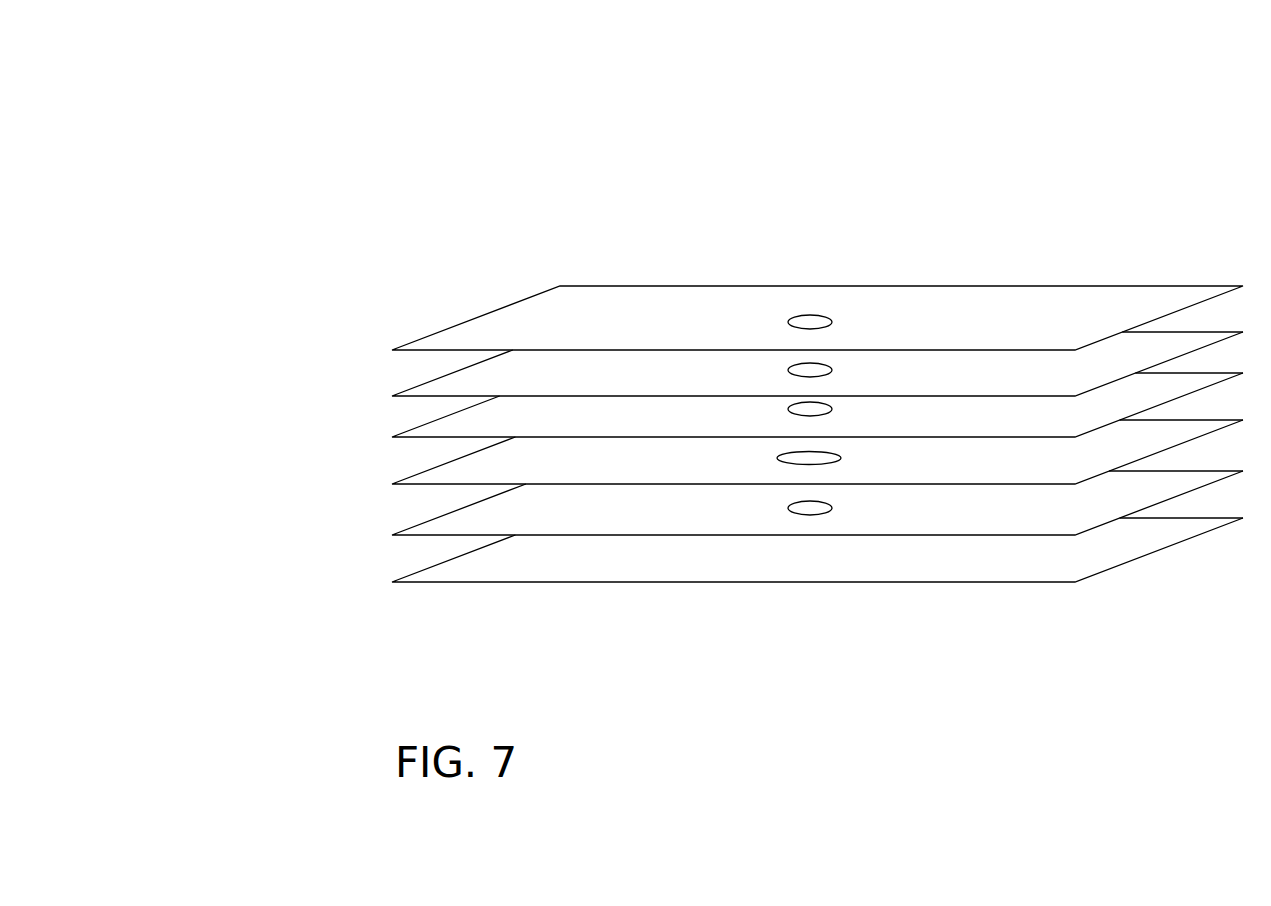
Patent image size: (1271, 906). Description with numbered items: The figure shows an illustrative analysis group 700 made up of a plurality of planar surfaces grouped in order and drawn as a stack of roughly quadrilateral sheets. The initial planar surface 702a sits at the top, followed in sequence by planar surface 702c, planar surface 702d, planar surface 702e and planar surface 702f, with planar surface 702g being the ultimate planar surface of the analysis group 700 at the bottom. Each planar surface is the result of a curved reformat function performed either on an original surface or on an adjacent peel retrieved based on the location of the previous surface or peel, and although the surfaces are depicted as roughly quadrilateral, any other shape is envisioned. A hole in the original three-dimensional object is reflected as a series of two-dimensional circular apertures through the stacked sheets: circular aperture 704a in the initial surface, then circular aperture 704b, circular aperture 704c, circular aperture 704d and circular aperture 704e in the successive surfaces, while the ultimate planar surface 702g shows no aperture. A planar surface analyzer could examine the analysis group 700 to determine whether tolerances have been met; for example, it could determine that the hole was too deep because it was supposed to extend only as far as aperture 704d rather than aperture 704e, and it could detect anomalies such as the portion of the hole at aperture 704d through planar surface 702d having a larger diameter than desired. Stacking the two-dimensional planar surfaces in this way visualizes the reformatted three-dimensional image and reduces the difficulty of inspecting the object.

The analysis group 700 is at (296, 103).
The planar surface 702a is at (817, 318).
The planar surface 702c is at (817, 364).
The planar surface 702d is at (817, 405).
The planar surface 702e is at (817, 452).
The planar surface 702f is at (817, 503).
The planar surface 702g is at (817, 550).
The circular aperture 704a is at (832, 322).
The circular aperture 704b is at (832, 370).
The circular aperture 704c is at (832, 409).
The circular aperture 704d is at (841, 458).
The circular aperture 704e is at (832, 508).